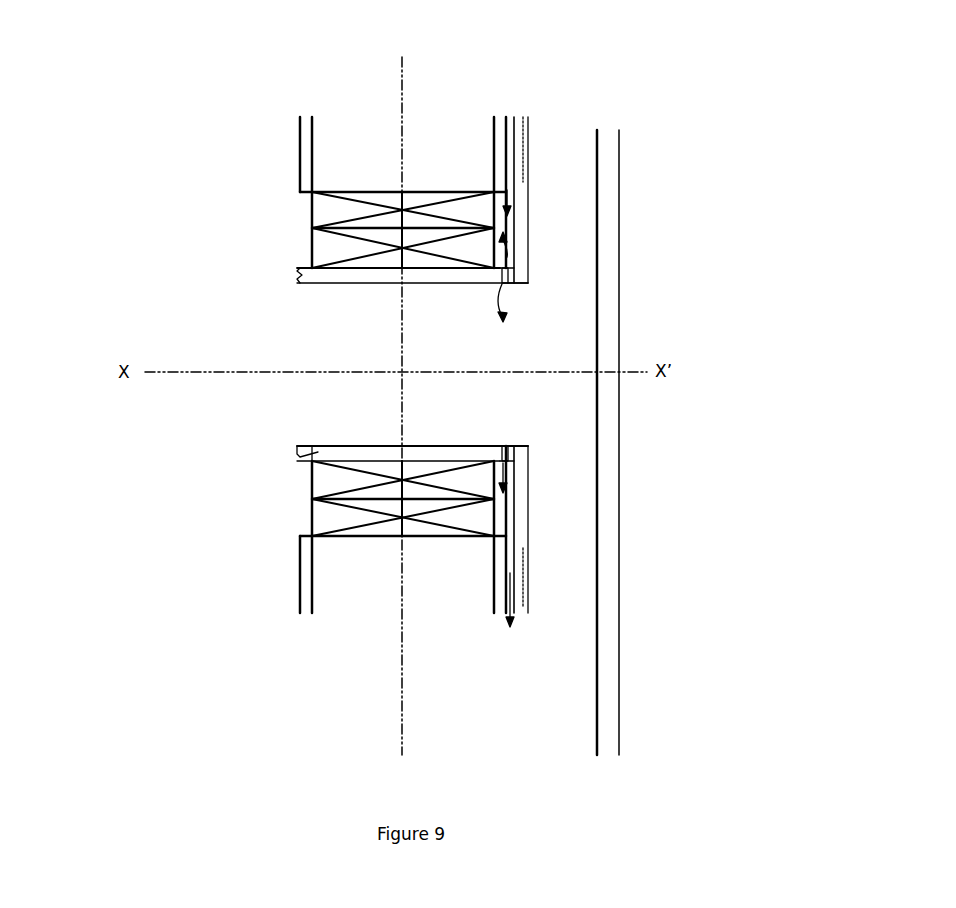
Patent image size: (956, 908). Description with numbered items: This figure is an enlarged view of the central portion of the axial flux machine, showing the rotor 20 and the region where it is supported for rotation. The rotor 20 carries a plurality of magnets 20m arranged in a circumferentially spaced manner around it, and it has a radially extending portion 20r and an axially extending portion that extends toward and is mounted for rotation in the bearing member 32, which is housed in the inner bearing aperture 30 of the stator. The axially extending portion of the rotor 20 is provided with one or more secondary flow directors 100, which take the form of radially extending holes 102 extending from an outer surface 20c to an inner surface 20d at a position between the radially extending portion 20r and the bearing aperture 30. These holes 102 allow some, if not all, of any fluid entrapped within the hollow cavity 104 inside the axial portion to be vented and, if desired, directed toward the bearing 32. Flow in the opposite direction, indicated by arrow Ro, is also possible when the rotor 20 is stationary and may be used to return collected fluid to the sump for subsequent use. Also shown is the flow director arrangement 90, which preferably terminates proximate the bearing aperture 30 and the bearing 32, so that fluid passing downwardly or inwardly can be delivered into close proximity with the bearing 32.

The rotor 20 is at (633, 436).
The magnets 20m is at (632, 348).
The radially extending portion 20r is at (625, 355).
The outer surface 20c is at (440, 358).
The inner surface 20d is at (625, 365).
The inner aperture 30 is at (327, 320).
The bearing member 32 is at (309, 362).
The flow director arrangement 90 is at (526, 333).
The secondary flow directors 100 is at (621, 363).
The radially extending holes 102 is at (622, 370).
The hollow cavity 104 is at (286, 364).
The arrow indicating outward flow direction Ro is at (500, 313).